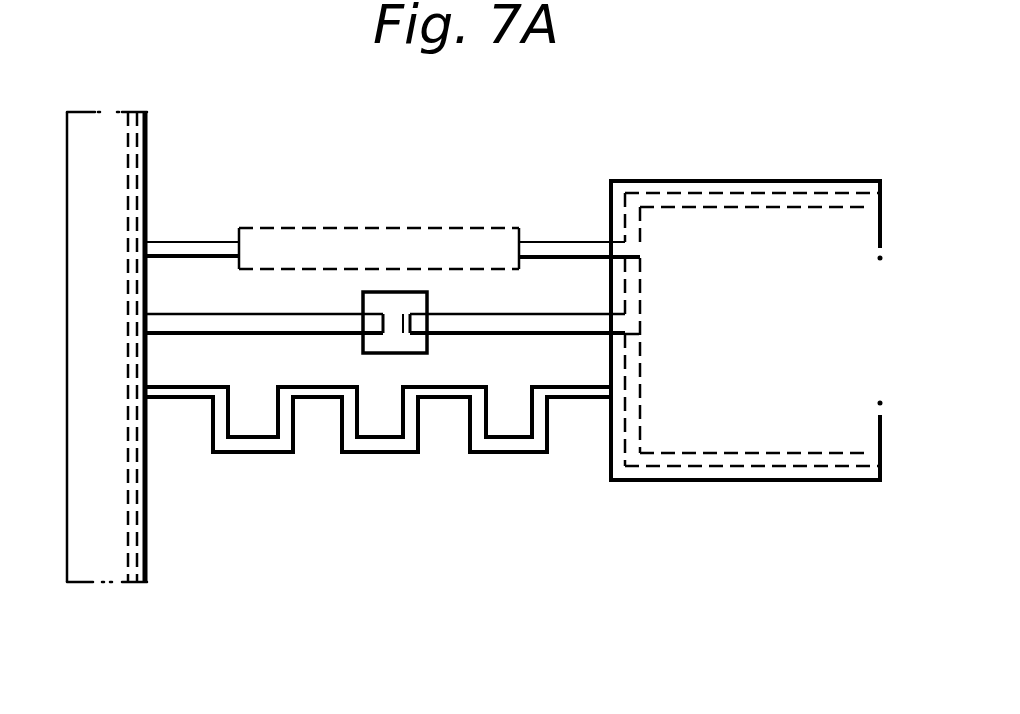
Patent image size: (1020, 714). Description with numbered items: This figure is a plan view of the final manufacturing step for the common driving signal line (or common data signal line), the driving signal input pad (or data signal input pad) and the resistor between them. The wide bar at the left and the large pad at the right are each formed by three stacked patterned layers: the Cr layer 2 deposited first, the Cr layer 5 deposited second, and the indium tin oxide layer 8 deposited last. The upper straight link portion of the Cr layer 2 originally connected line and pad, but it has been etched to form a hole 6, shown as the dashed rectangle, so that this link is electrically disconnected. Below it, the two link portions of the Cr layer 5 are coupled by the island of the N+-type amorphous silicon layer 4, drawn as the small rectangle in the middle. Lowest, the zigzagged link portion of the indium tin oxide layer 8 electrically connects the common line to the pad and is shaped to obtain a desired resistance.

The Cr layer 2 is at (553, 242).
The N+-type amorphous silicon layer 4 is at (420, 341).
The Cr layer 5 is at (297, 328).
The hole 6 is at (331, 226).
The indium tin oxide layer 8 is at (357, 464).